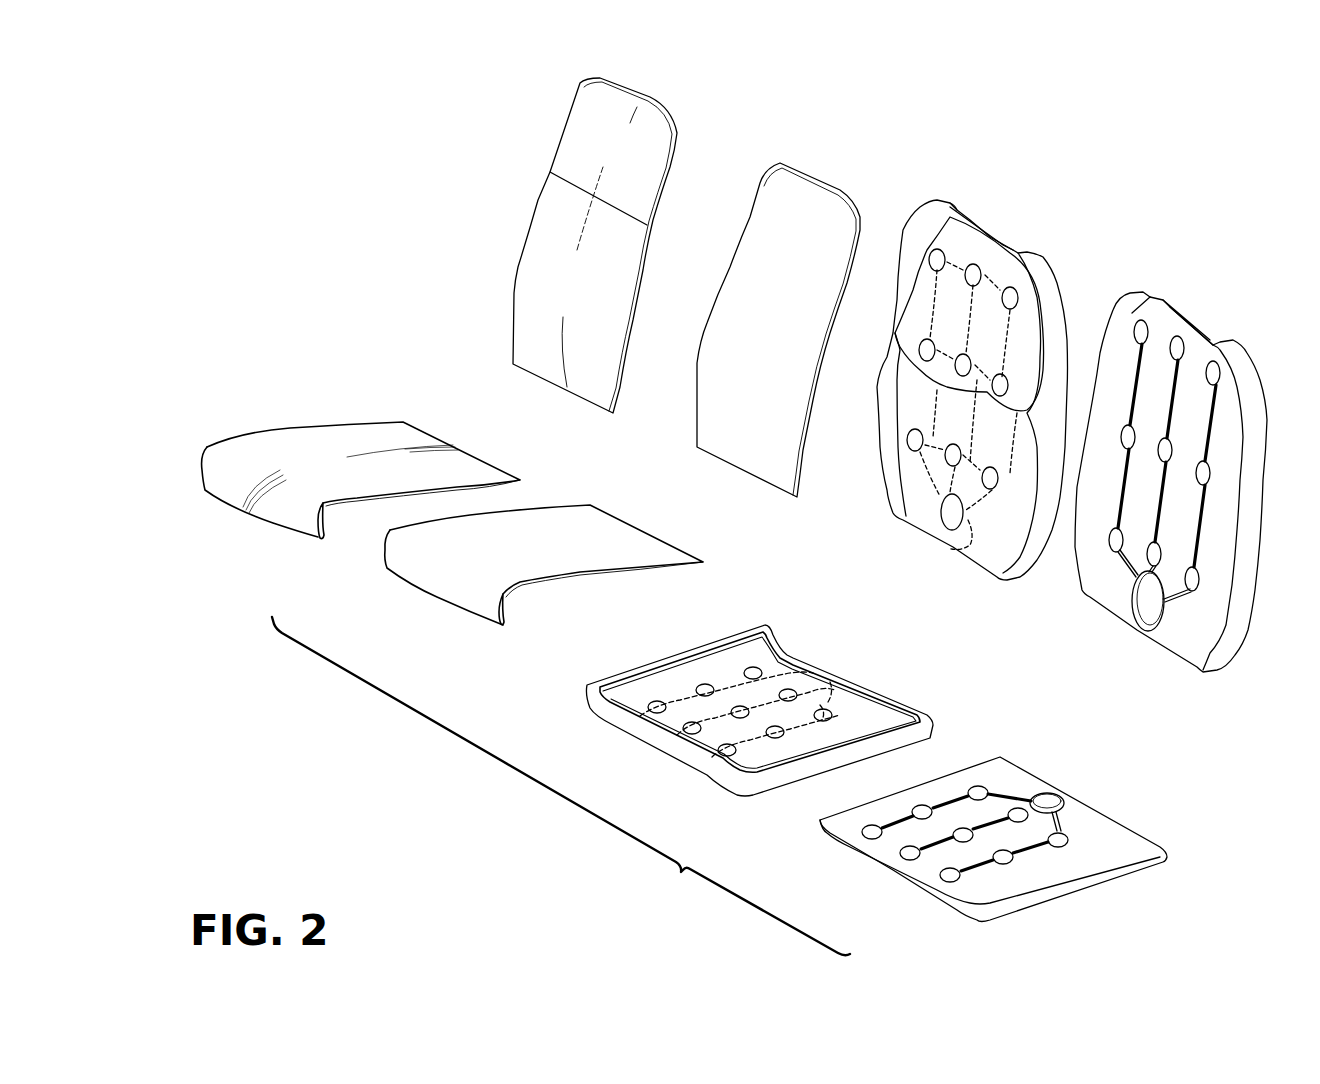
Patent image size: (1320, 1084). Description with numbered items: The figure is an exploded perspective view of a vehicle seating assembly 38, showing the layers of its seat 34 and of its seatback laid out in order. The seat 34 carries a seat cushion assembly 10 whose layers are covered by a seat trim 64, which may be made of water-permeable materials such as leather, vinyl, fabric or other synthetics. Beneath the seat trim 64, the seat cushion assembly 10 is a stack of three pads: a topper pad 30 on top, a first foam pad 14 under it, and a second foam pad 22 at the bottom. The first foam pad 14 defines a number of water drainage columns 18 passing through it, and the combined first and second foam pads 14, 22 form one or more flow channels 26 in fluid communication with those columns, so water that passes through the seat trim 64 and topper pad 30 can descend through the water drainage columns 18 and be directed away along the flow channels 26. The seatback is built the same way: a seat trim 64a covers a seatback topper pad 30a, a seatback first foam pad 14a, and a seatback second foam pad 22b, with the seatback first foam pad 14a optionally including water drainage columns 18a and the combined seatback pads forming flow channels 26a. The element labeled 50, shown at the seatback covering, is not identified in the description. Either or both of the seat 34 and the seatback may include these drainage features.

The seat cushion assembly 10 is at (561, 786).
The first foam pad 14 is at (759, 695).
The seatback first foam pad 14a is at (951, 379).
The water drainage columns 18 is at (703, 684).
The water drainage columns 18a is at (910, 442).
The second foam pad 22 is at (970, 804).
The seat back support 22b is at (1151, 463).
The flow channel 26 is at (977, 791).
The flow channels 26a is at (1112, 543).
The topper pad 30 is at (403, 570).
The seatback topper pad 30a is at (792, 193).
The seat 34 is at (329, 442).
The seating assembly 38 is at (333, 252).
The seat back trim 50 is at (564, 227).
The seat trim 64 is at (320, 448).
The seat trim 64a is at (540, 258).